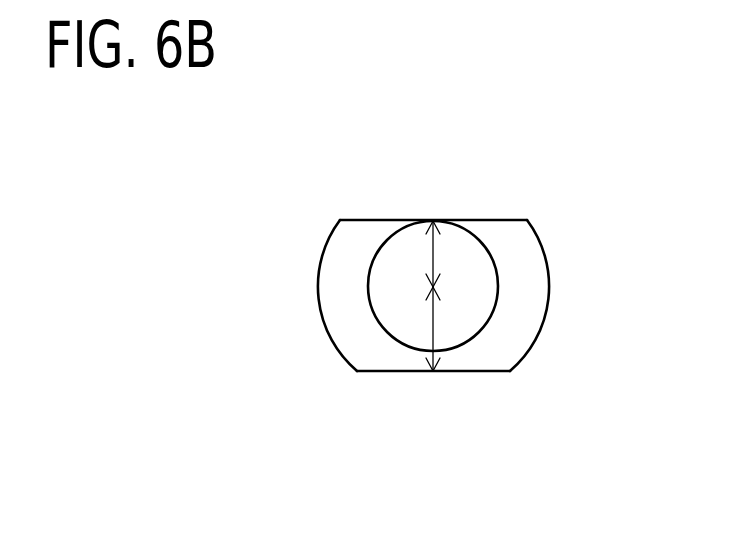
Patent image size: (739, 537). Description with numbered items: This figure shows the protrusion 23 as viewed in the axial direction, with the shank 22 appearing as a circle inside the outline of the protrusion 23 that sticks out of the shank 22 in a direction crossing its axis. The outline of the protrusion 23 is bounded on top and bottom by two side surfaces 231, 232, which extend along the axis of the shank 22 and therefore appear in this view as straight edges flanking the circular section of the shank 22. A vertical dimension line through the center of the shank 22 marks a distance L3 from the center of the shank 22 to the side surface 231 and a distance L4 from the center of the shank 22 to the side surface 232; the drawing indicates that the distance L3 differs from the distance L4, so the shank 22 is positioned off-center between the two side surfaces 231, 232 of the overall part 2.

The mold 2 is at (535, 231).
The shank 22 is at (465, 307).
The protrusion 23 is at (523, 262).
The side surface 231 is at (361, 220).
The side surface 232 is at (472, 372).
The distance L3 is at (437, 253).
The distance L4 is at (433, 320).